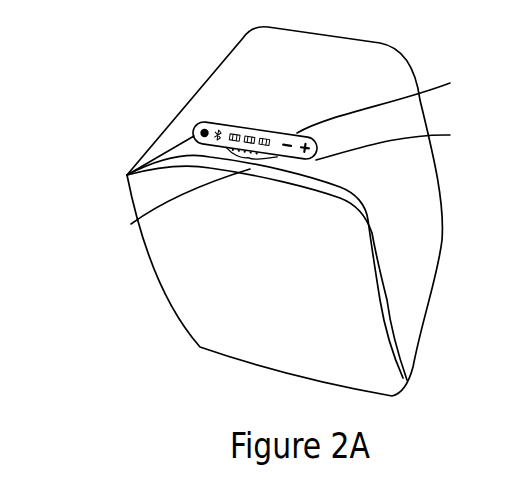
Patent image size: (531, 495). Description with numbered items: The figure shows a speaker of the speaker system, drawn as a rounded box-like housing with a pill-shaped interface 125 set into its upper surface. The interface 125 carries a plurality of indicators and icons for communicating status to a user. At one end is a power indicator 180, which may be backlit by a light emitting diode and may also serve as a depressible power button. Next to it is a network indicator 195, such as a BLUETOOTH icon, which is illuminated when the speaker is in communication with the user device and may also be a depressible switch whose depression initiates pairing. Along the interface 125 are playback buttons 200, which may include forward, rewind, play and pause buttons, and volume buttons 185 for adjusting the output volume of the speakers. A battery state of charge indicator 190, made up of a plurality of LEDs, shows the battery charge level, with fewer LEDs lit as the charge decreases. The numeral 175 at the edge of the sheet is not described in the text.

The interface 125 is at (440, 134).
The handle 175 is at (530, 480).
The power indicator 180 is at (127, 175).
The volume buttons 185 is at (440, 87).
The battery state of charge indicator 190 is at (131, 224).
The network indicator 195 is at (197, 126).
The playback buttons 200 is at (257, 128).